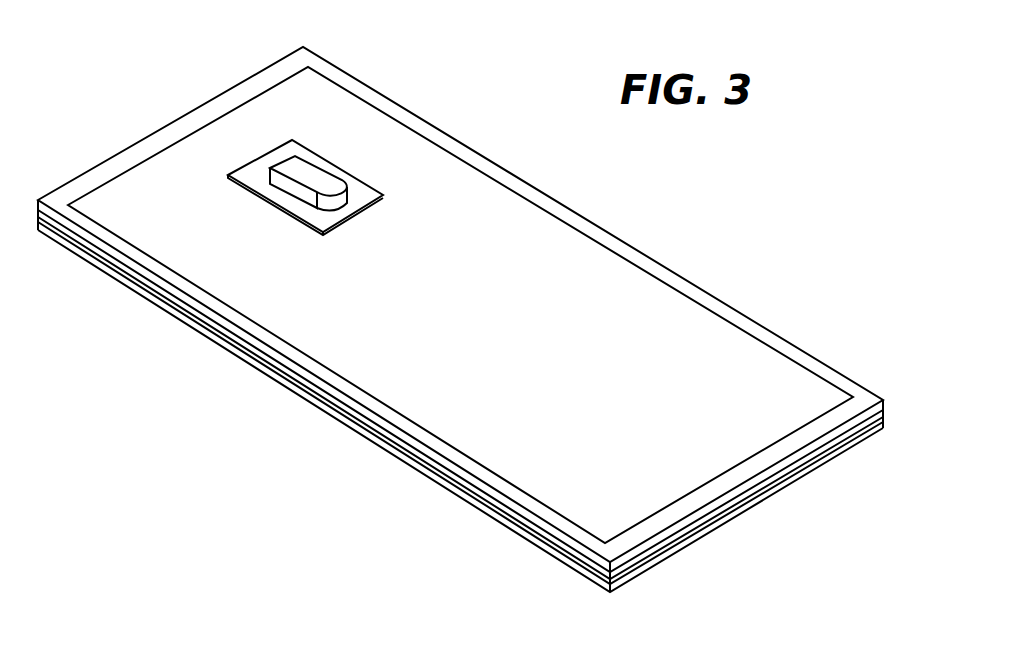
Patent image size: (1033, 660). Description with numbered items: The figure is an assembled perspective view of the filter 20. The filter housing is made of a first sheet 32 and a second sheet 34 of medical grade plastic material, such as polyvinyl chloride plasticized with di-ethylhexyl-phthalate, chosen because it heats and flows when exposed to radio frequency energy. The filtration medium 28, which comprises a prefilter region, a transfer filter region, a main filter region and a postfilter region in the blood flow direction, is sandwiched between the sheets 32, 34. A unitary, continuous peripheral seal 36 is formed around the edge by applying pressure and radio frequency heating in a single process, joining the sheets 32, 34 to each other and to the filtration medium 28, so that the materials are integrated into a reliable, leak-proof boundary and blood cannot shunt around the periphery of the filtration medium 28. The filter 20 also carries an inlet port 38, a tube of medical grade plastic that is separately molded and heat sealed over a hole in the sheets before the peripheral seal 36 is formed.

The filter 20 is at (460, 322).
The filtration medium 28 is at (555, 543).
The first sheet 32 is at (537, 275).
The second sheet 34 is at (480, 510).
The continuous peripheral seal 36 is at (433, 124).
The inlet port 38 is at (302, 168).